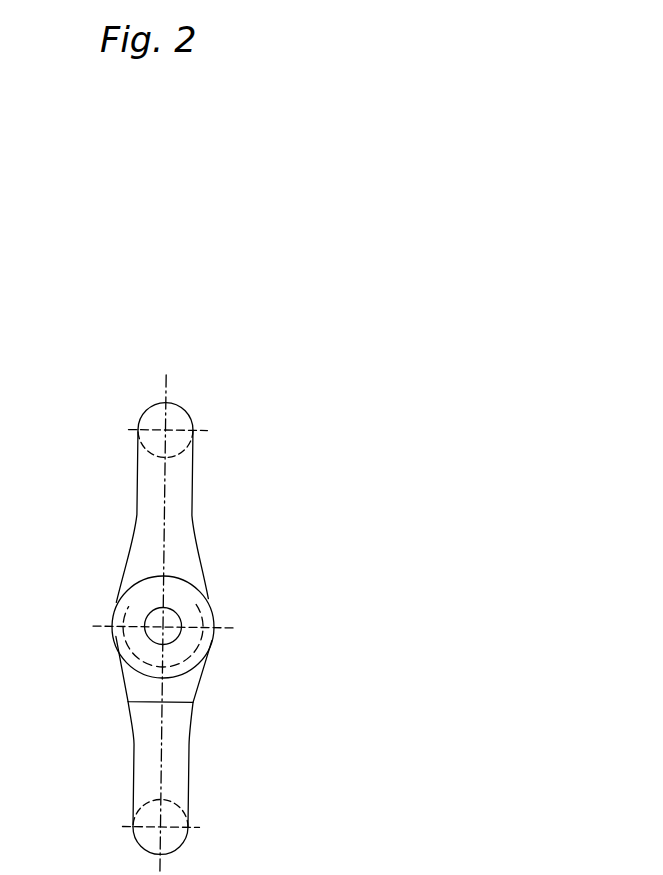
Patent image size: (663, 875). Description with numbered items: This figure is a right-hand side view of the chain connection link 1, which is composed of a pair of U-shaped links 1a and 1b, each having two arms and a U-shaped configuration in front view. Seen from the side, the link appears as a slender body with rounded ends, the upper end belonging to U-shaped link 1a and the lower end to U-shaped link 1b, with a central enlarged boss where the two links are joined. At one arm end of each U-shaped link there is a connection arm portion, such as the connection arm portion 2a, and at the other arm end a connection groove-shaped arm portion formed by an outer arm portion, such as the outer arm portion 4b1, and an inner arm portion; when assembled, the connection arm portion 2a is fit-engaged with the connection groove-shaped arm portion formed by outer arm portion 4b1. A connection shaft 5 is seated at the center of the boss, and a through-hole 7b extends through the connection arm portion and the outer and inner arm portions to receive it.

The chain connection link 1 is at (289, 453).
The U-shaped link 1a is at (193, 463).
The U-shaped link 1b is at (188, 793).
The connection arm portion 2a is at (198, 647).
The outer arm portion 4b1 is at (212, 617).
The connection shaft 5 is at (172, 617).
The through-hole 7b is at (150, 637).